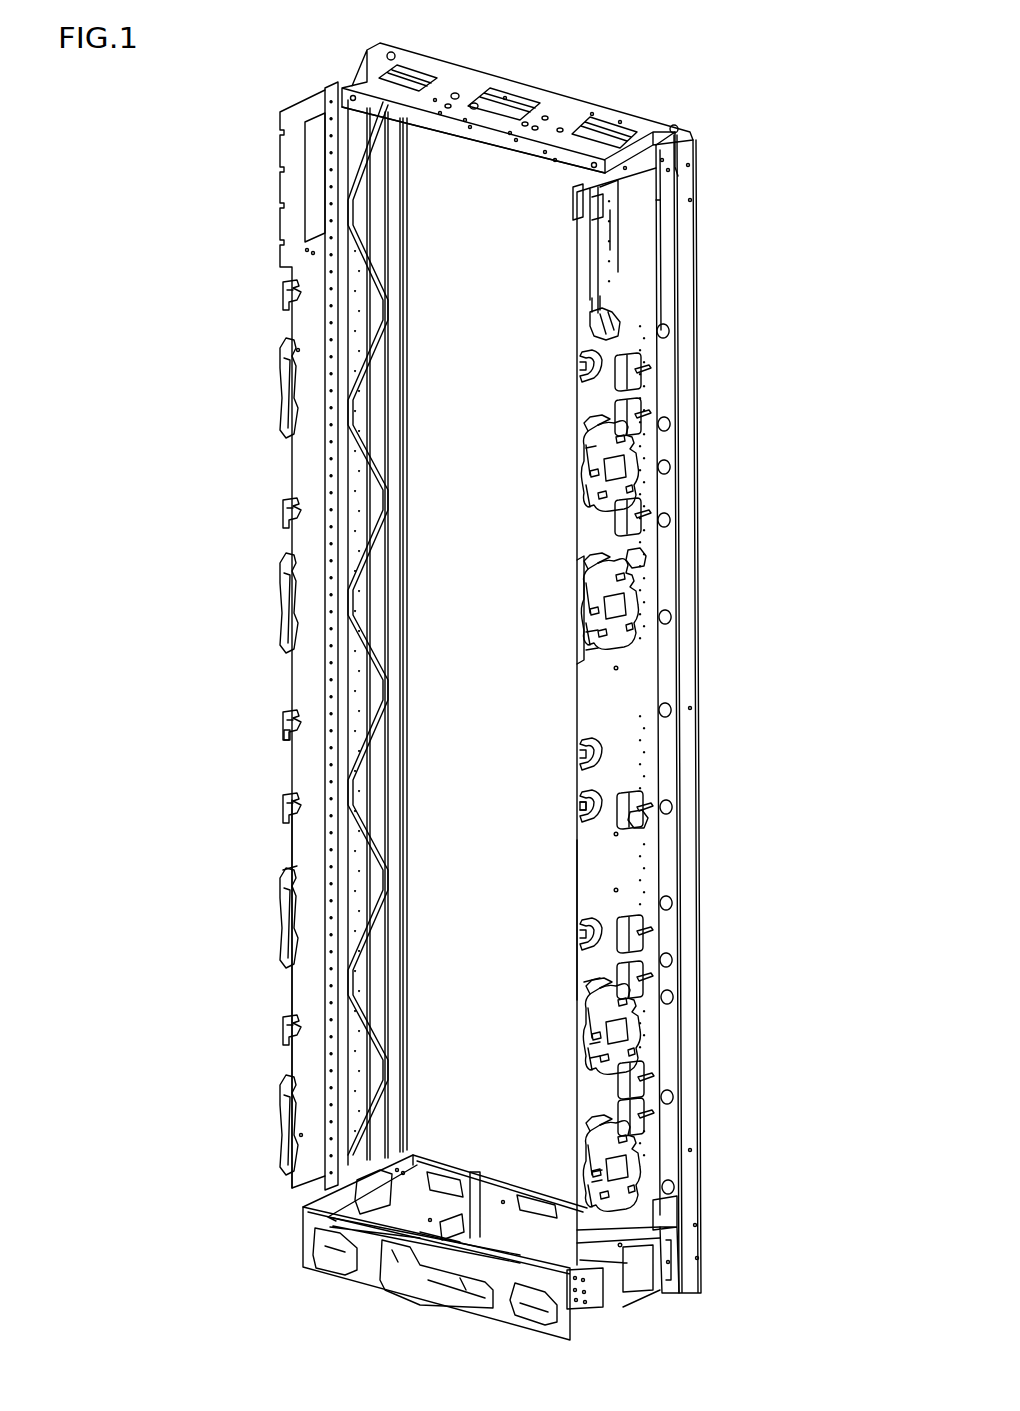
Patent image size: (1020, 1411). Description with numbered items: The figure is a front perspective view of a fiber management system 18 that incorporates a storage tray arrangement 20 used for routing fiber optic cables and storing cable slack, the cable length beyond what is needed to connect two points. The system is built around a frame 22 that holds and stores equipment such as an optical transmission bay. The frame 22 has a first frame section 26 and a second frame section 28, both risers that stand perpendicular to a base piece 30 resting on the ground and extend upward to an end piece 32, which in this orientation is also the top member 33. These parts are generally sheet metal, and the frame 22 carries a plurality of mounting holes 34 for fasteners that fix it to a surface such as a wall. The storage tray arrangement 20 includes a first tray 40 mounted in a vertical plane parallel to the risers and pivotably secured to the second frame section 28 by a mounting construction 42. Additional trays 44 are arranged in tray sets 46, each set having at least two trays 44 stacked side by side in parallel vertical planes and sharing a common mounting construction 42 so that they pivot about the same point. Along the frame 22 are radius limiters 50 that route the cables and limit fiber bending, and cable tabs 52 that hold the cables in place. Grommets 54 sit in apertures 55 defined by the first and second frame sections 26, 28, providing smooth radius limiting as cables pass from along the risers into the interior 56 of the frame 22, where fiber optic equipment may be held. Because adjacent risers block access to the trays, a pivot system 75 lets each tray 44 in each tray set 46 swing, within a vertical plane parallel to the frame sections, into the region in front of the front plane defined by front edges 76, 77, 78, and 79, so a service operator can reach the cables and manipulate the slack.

The fiber management system 18 is at (592, 62).
The storage tray arrangement 20 is at (215, 270).
The frame 22 is at (589, 103).
The first frame section 26 is at (291, 471).
The second frame section 28 is at (580, 697).
The base piece 30 is at (266, 1265).
The end piece 32 is at (465, 67).
The top member 33 is at (530, 86).
The mounting holes 34 is at (676, 425).
The first tray 40 is at (583, 613).
The mounting construction 42 is at (556, 421).
The trays 44 is at (292, 618).
The tray sets 46 is at (252, 365).
The radius limiters 50 is at (592, 324).
The cable tabs 52 is at (626, 372).
The grommets 54 is at (283, 723).
The apertures 55 is at (295, 738).
The interior 56 is at (405, 625).
The pivot system 75 is at (260, 875).
The front edge 76 is at (292, 981).
The front edge 77 is at (580, 879).
The front edge 78 is at (483, 143).
The front edge 79 is at (393, 1292).